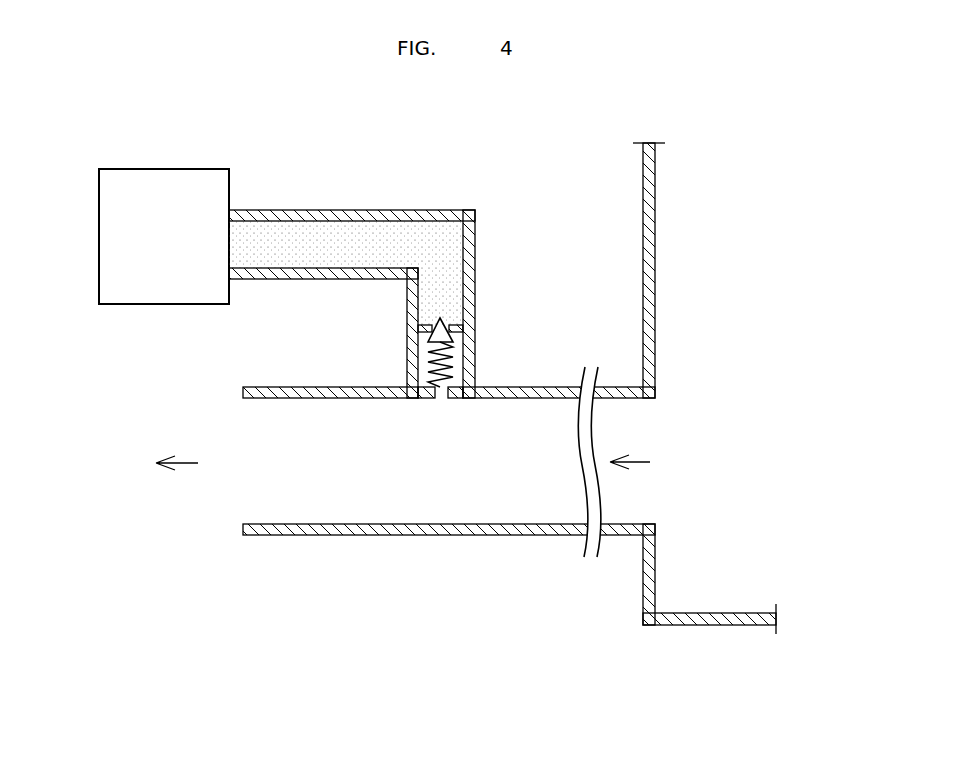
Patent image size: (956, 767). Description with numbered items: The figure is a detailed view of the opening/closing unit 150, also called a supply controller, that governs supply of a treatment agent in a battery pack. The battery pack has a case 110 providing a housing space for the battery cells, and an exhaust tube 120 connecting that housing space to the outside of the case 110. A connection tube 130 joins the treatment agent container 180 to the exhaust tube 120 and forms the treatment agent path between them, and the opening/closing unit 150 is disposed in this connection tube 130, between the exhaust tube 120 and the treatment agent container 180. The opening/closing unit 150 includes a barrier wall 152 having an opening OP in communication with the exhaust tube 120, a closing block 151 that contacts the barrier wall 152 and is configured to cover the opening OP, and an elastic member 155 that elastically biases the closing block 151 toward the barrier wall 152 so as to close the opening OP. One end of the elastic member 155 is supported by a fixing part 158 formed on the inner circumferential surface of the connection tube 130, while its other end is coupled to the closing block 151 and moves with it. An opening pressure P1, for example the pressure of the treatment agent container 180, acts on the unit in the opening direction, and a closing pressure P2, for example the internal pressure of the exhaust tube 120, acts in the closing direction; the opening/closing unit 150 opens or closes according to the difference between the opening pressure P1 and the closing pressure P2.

The case 110 is at (652, 235).
The exhaust tube 120 is at (422, 535).
The connection tube 130 is at (335, 210).
The opening/closing unit 150 is at (455, 343).
The closing block 151 is at (437, 320).
The barrier wall 152 is at (420, 328).
The elastic member 155 is at (450, 360).
The fixing part 158 is at (425, 390).
The treatment agent container 180 is at (162, 171).
The opening OP is at (463, 310).
The opening pressure P1 is at (346, 273).
The closing pressure P2 is at (439, 433).